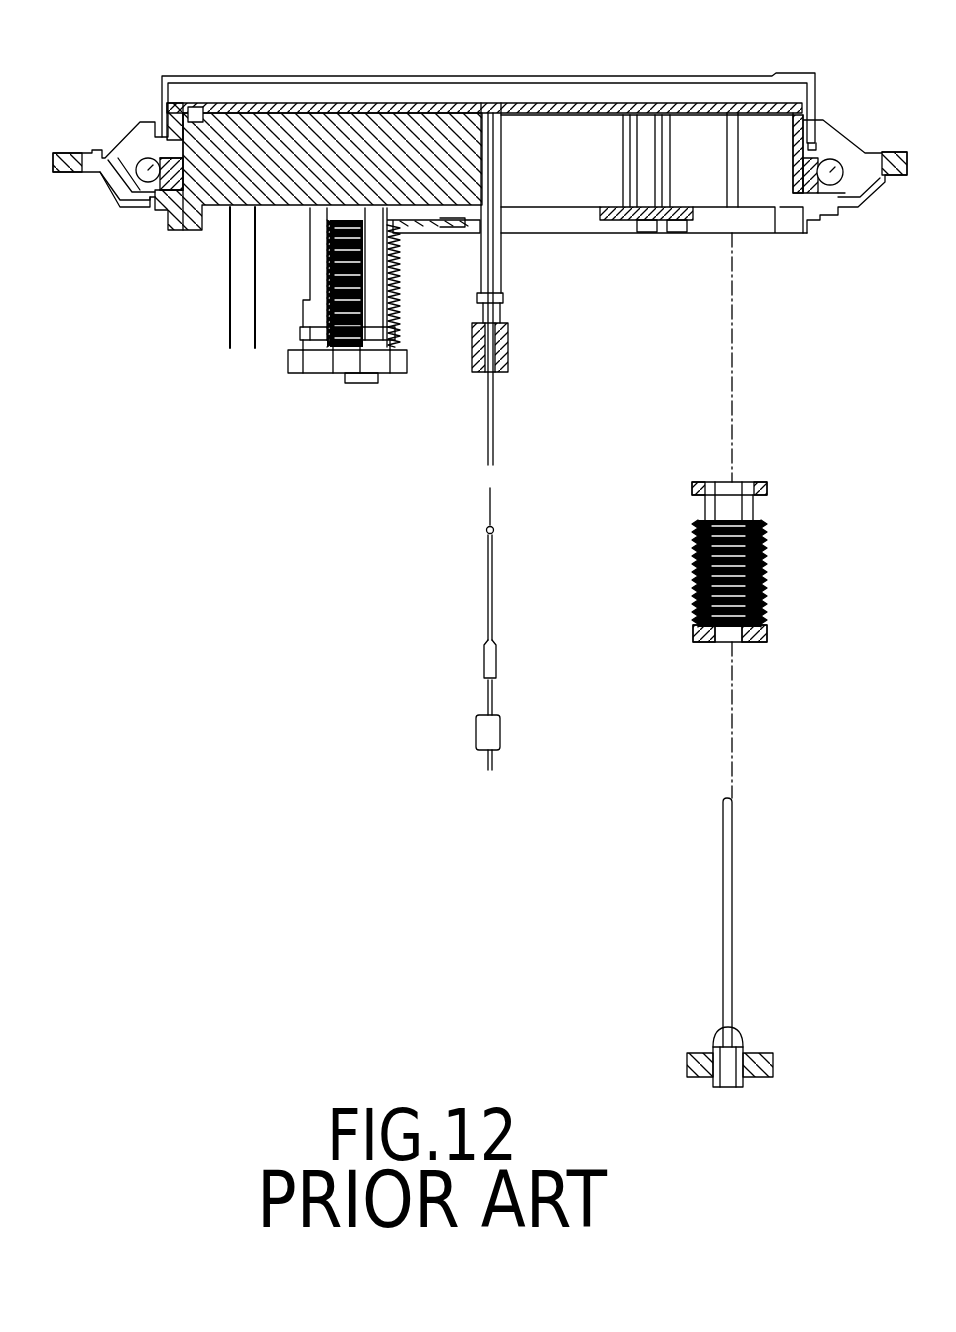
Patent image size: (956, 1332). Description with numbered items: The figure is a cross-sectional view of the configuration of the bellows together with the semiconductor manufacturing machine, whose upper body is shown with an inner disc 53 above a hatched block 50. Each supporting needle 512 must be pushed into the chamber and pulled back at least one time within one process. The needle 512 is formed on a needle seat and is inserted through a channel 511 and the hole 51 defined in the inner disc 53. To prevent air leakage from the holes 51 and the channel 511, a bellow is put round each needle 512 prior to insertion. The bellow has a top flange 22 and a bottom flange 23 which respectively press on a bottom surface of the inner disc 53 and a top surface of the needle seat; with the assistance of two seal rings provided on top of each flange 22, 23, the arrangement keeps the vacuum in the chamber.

The top flange 22 is at (767, 484).
The bottom flange 23 is at (767, 637).
The rotor hub block 50 is at (222, 163).
The hole 51 is at (735, 110).
The inner disc 53 is at (577, 110).
The channel 511 is at (742, 168).
The supporting needle 512 is at (732, 920).